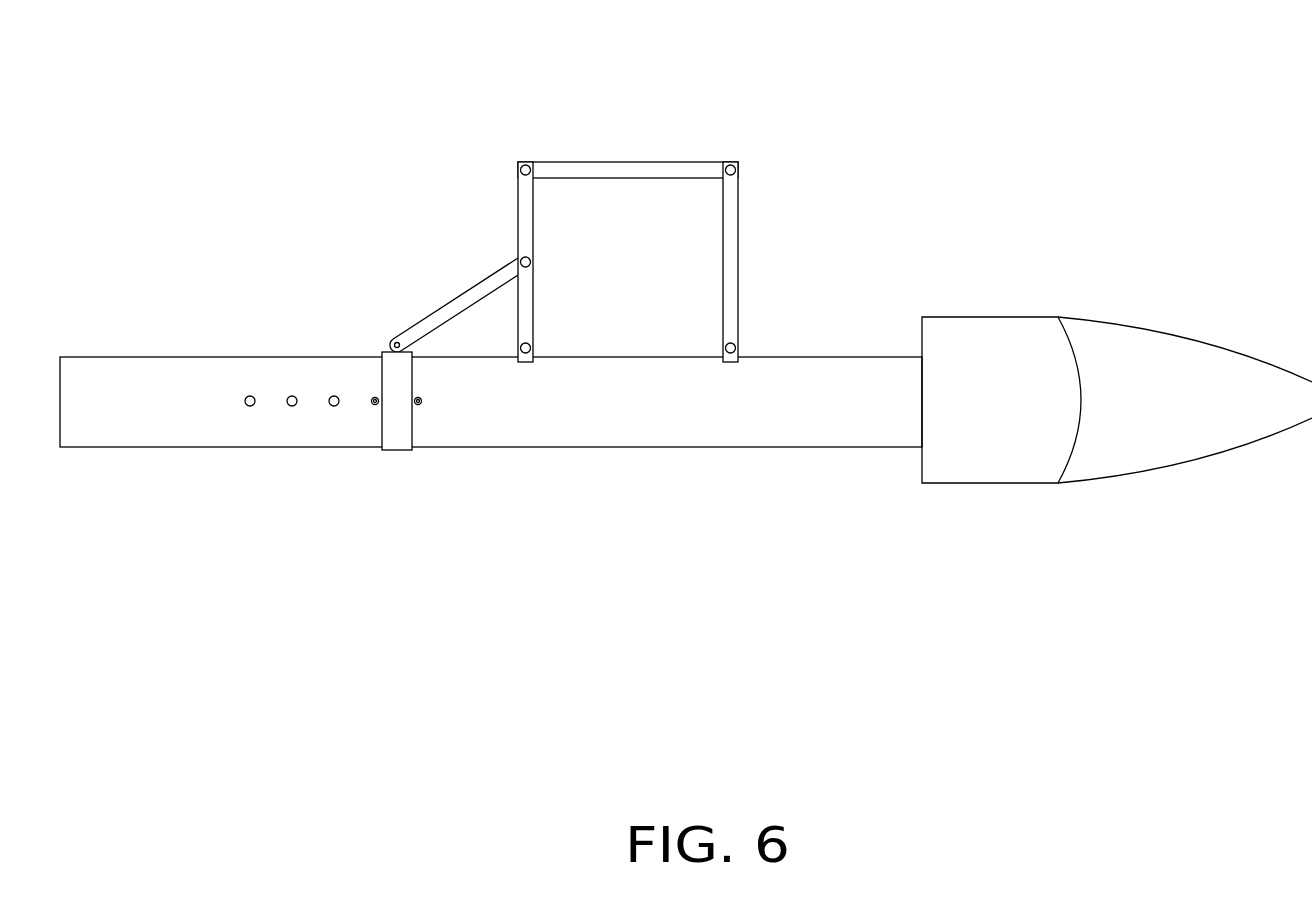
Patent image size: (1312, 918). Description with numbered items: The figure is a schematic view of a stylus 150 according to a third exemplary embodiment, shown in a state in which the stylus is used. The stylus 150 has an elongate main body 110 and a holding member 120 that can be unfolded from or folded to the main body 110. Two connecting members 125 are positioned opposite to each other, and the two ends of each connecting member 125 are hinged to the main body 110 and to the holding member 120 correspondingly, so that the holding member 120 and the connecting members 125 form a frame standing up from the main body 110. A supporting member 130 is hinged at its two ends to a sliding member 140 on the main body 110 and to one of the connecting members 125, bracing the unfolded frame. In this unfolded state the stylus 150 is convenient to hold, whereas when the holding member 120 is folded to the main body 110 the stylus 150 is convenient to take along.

The main body 110 is at (760, 415).
The holding member 120 is at (633, 170).
The connecting member 125 is at (735, 242).
The supporting member 130 is at (455, 308).
The sliding member 140 is at (402, 430).
The stylus 150 is at (454, 86).